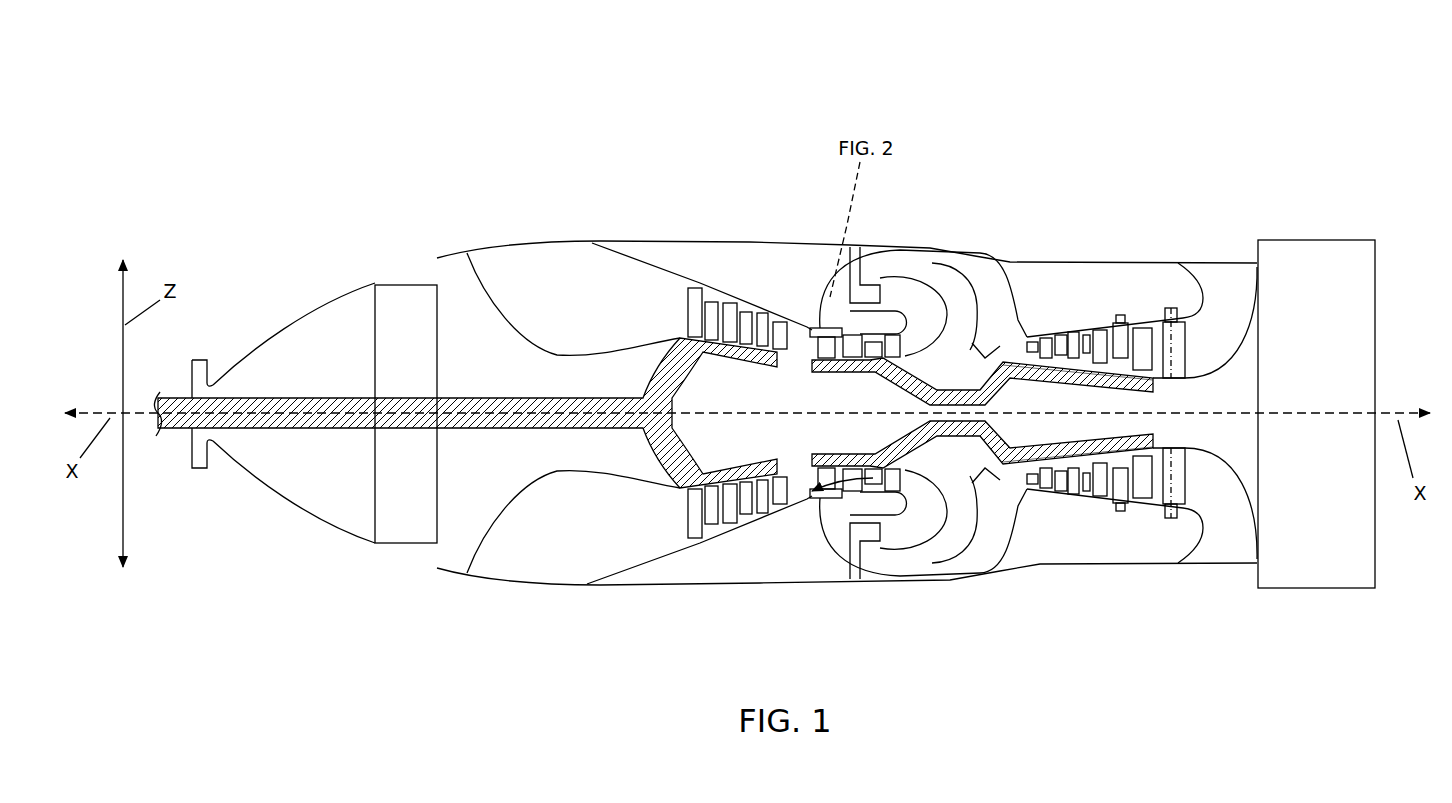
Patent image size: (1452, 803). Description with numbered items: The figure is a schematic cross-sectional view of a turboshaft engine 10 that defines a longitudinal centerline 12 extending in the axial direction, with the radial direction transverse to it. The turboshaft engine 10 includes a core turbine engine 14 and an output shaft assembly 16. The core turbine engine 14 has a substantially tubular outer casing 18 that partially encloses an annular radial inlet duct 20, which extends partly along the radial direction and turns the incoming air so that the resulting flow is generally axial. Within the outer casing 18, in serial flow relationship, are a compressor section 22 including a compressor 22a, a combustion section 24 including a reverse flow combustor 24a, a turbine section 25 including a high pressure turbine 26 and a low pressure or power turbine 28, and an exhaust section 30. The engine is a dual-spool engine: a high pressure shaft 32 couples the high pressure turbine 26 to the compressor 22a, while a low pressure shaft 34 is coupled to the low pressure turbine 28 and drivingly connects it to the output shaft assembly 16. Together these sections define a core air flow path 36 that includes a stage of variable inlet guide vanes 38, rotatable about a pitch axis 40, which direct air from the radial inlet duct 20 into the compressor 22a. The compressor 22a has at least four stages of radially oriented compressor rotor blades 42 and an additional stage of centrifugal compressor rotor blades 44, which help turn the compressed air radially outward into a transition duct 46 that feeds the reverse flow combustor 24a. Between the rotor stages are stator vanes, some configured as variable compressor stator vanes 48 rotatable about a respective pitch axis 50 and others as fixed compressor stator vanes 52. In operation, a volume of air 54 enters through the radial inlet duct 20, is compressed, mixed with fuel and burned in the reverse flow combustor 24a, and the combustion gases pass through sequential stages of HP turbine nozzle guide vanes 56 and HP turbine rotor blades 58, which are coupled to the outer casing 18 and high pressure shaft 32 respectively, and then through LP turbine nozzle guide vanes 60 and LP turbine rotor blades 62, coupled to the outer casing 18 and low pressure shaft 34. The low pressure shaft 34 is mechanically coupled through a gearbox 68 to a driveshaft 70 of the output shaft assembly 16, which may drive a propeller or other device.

The turboshaft engine 10 is at (851, 103).
The longitudinal centerline 12 is at (1398, 408).
The core turbine engine 14 is at (1096, 391).
The output shaft assembly 16 is at (387, 262).
The outer casing 18 is at (807, 247).
The radial inlet duct 20 is at (1280, 426).
The compressor section 22 is at (1096, 412).
The compressor 22a is at (1063, 335).
The combustion section 24 is at (923, 360).
The reverse flow combustor 24a is at (923, 290).
The turbine section 25 is at (801, 305).
The high pressure turbine 26 is at (846, 384).
The low pressure turbine 28 is at (730, 346).
The exhaust section 30 is at (523, 258).
The high pressure shaft 32 is at (1045, 373).
The low pressure shaft 34 is at (595, 400).
The core air flow path 36 is at (1222, 346).
The inlet guide vanes 38 is at (1205, 489).
The pitch axis 40 is at (1177, 490).
The compressor rotor blades 42 is at (1093, 498).
The centrifugal compressor rotor blades 44 is at (965, 560).
The transition duct 46 is at (972, 283).
The variable compressor stator vanes 48 is at (1125, 497).
The pitch axis 50 is at (1100, 497).
The fixed compressor stator vanes 52 is at (1085, 368).
The volume of air 54 is at (1232, 528).
The HP turbine nozzle guide vanes 56 is at (850, 343).
The HP turbine rotor blades 58 is at (876, 357).
The LP turbine nozzle guide vanes 60 is at (713, 297).
The LP turbine rotor blades 62 is at (732, 307).
The gearbox 68 is at (373, 337).
The driveshaft 70 is at (270, 400).